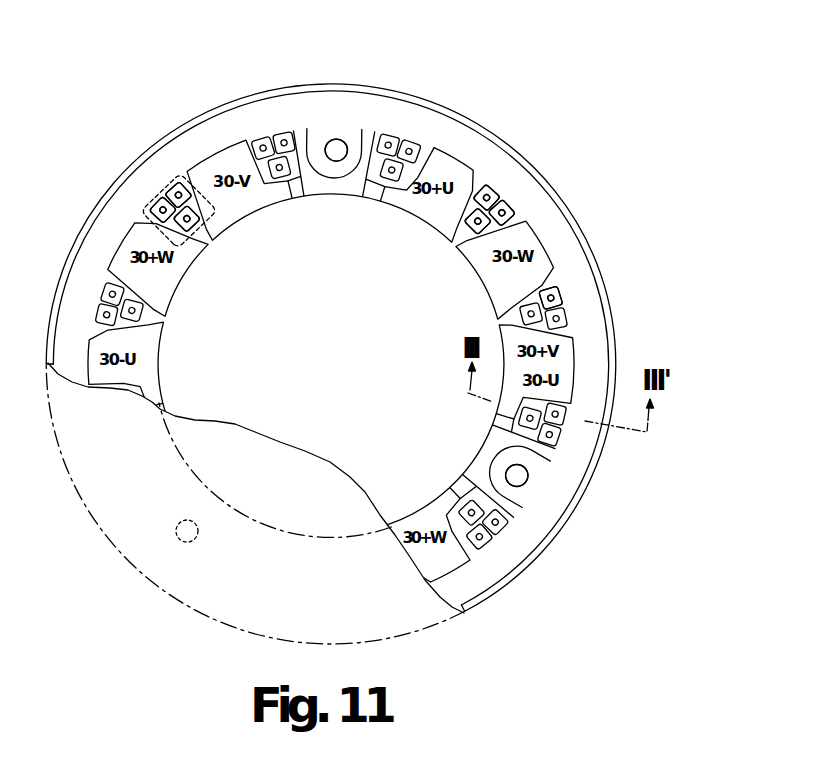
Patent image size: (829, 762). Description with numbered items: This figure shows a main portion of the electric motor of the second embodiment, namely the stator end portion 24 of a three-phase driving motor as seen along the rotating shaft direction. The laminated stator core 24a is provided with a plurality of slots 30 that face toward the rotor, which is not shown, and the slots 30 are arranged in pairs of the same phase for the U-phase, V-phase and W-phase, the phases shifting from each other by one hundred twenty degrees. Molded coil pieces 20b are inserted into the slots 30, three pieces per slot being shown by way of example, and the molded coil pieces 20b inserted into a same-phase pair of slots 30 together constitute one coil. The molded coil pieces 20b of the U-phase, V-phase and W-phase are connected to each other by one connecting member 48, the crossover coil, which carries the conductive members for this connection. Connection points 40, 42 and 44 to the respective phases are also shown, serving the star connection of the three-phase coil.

The stator end portion 24 is at (574, 199).
The laminated stator core 24a is at (612, 338).
The molded coil piece 20b is at (564, 292).
The slot 30 is at (160, 185).
The connection point 40 is at (341, 148).
The connection point 42 is at (516, 480).
The connection point 44 is at (178, 534).
The connecting member 48 is at (503, 170).